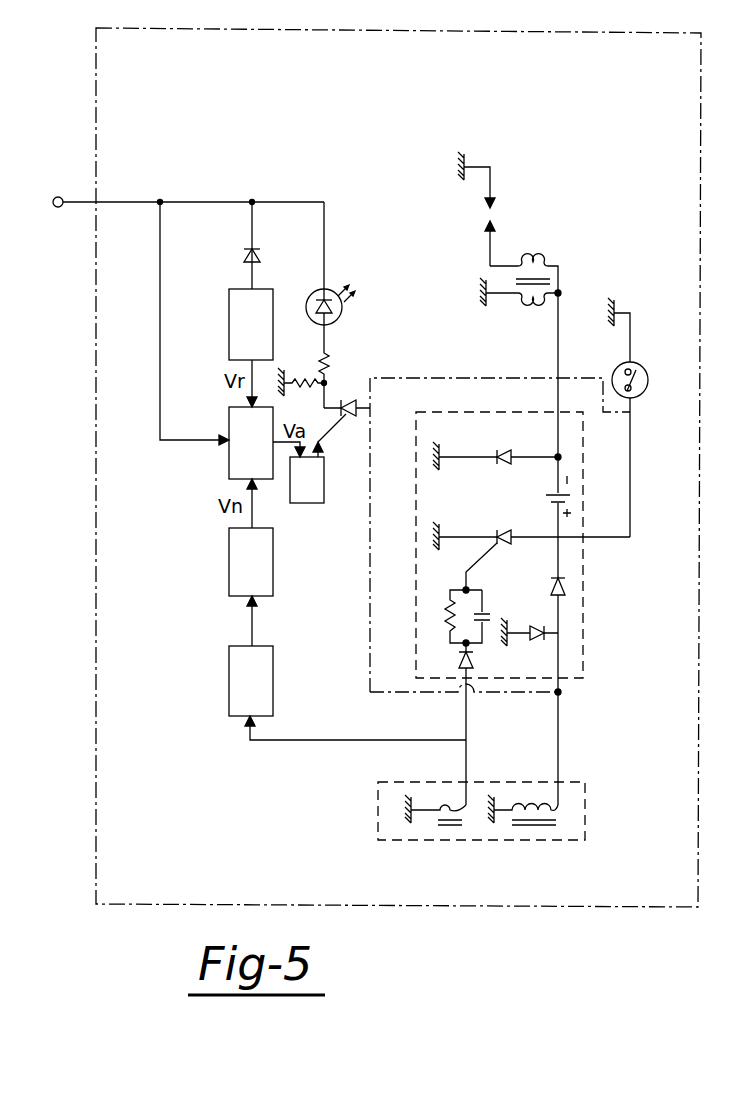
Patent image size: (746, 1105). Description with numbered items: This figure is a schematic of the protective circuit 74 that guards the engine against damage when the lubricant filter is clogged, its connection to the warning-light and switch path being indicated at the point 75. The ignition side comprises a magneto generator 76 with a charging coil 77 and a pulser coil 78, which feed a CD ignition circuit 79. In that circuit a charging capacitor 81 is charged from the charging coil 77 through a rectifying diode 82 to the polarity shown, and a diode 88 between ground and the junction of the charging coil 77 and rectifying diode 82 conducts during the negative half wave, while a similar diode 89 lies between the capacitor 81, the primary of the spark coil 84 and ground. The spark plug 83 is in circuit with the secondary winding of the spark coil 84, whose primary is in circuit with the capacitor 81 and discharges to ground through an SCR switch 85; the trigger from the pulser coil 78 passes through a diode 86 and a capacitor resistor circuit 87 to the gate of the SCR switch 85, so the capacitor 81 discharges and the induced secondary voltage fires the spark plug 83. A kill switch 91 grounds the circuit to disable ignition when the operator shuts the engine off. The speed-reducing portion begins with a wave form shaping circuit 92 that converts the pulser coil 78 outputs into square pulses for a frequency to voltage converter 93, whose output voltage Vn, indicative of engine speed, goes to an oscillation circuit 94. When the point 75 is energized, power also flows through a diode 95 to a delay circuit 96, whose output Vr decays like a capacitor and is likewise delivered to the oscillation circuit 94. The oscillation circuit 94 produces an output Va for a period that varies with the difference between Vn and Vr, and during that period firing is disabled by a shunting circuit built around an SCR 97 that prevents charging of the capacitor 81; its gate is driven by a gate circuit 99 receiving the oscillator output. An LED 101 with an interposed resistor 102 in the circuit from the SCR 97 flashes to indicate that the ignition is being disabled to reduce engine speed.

The protective circuit 74 is at (96, 88).
The point 75 is at (53, 201).
The magneto generator 76 is at (585, 810).
The charging coil 77 is at (530, 830).
The pulser coil 78 is at (448, 828).
The CD ignition circuit 79 is at (583, 652).
The charging capacitor 81 is at (570, 498).
The rectifying diode 82 is at (566, 590).
The spark plug 83 is at (494, 208).
The spark coil 84 is at (561, 279).
The SCR switch 85 is at (503, 533).
The diode 86 is at (460, 660).
The capacitor resistor circuit 87 is at (450, 601).
The diode 88 is at (538, 626).
The diode 89 is at (503, 451).
The kill switch 91 is at (648, 380).
The wave form shaping circuit 92 is at (229, 678).
The frequency to voltage converter 93 is at (229, 562).
The oscillation circuit 94 is at (229, 460).
The diode 95 is at (244, 255).
The delay circuit 96 is at (229, 332).
The SCR 97 is at (349, 401).
The gate circuit 99 is at (302, 503).
The LED 101 is at (338, 293).
The resistor 102 is at (331, 363).